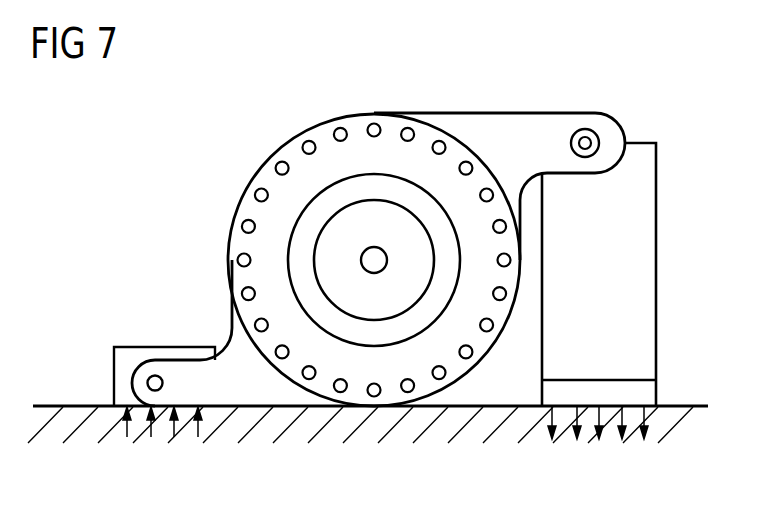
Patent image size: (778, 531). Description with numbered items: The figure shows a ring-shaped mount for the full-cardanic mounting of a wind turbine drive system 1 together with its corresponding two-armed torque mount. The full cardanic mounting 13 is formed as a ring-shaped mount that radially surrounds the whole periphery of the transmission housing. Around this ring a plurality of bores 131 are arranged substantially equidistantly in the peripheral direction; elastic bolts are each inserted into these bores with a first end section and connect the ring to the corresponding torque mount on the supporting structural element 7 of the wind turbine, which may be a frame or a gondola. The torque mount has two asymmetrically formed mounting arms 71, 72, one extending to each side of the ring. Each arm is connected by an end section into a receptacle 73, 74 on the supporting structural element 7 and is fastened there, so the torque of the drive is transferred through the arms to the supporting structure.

The gear unit 1 is at (312, 188).
The full cardanic mounting 13 is at (386, 398).
The bores 131 is at (339, 124).
The supporting structural element 7 is at (695, 418).
The mounting arm 71 is at (173, 360).
The mounting arm 72 is at (556, 113).
The receptacle 73 is at (132, 385).
The receptacle 74 is at (657, 236).